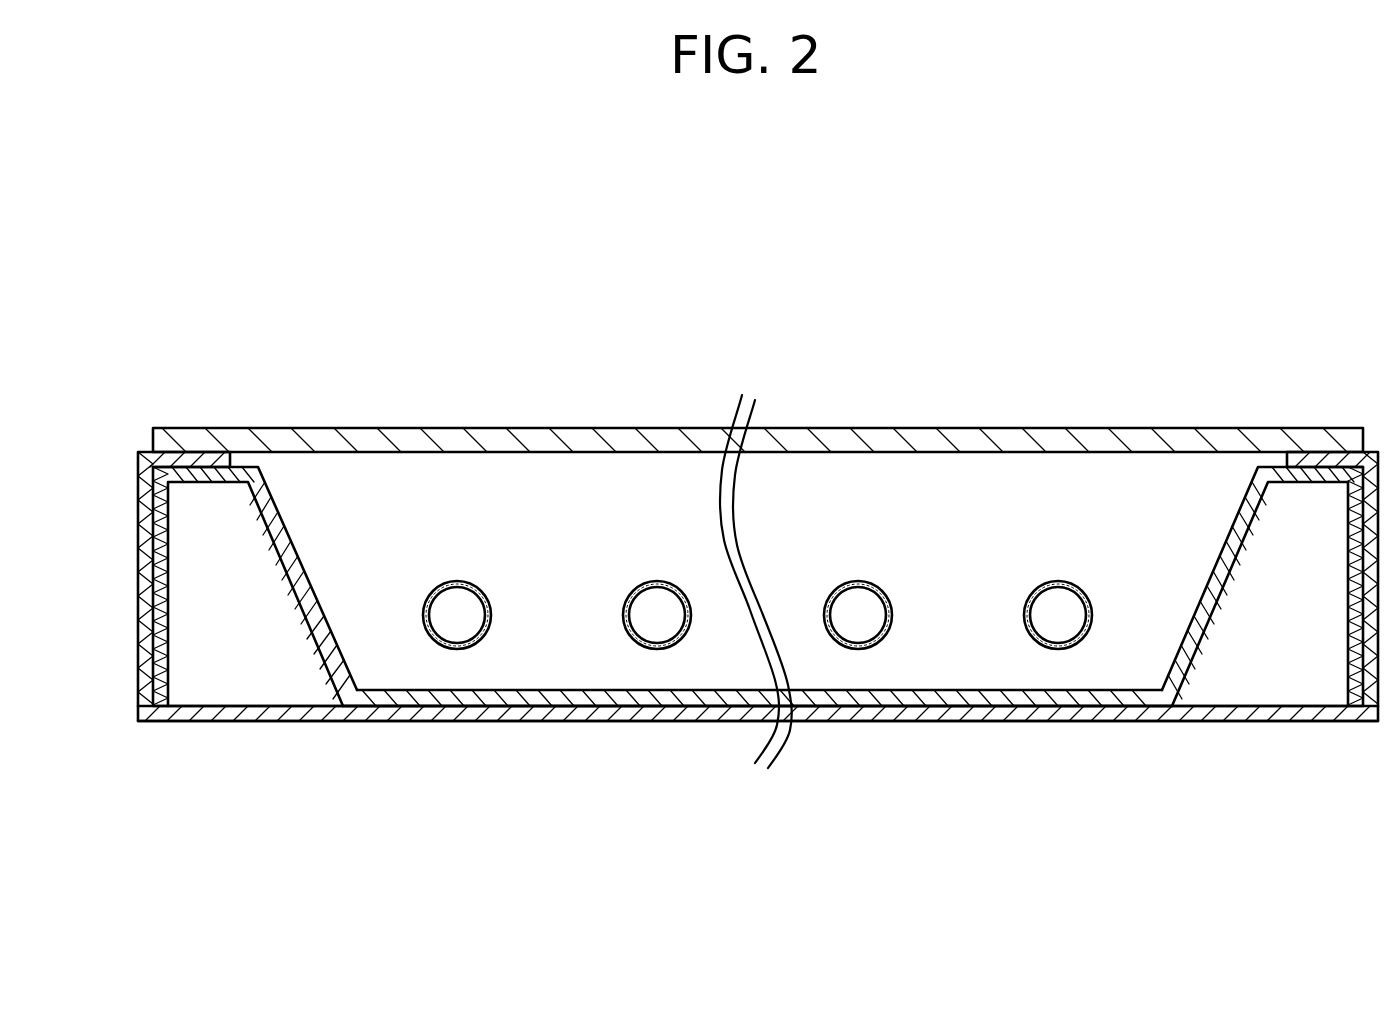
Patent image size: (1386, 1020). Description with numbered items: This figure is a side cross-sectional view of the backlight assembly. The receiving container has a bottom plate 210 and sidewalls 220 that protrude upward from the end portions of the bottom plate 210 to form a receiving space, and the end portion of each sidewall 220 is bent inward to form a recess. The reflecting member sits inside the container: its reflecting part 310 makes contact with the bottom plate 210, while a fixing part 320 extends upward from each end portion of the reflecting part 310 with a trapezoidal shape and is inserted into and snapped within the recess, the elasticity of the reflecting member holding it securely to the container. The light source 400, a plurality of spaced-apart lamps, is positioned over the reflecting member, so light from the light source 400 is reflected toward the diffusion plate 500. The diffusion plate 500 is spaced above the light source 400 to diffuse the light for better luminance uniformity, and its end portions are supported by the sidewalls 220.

The bottom plate 210 is at (382, 713).
The sidewalls 220 is at (148, 556).
The reflecting part 310 is at (493, 700).
The fixing part 320 is at (160, 633).
The light source 400 is at (652, 650).
The diffusion plate 500 is at (268, 440).